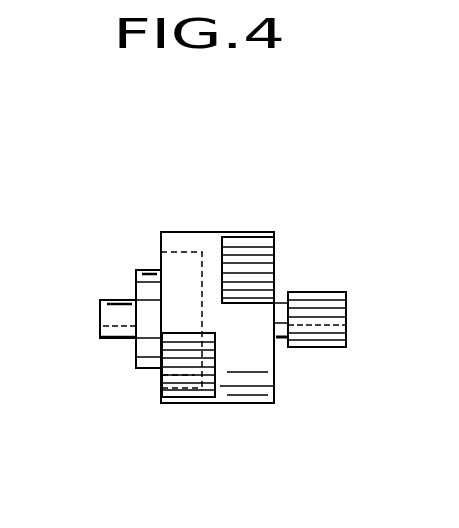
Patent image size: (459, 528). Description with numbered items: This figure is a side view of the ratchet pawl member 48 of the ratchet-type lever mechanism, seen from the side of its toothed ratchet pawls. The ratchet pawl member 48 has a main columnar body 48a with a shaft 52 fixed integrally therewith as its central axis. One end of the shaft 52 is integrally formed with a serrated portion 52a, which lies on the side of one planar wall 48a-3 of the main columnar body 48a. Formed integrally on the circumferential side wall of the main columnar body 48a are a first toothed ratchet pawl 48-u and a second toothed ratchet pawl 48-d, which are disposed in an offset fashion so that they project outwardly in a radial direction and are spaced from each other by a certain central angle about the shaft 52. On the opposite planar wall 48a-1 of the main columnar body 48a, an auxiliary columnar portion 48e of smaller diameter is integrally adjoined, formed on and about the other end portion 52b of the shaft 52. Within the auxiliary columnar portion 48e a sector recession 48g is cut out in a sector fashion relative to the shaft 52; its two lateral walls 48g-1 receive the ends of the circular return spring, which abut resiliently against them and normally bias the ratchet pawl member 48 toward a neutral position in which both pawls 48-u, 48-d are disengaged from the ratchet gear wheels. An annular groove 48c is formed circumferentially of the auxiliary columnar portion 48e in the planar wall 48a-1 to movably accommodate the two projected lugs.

The ratchet pawl member 48 is at (125, 183).
The main columnar body 48a is at (230, 404).
The planar wall 48a-1 is at (161, 262).
The planar wall 48a-3 is at (275, 380).
The annular groove 48c is at (193, 252).
The second toothed ratchet pawl 48-d is at (253, 252).
The first toothed ratchet pawl 48-u is at (180, 373).
The auxiliary columnar portion 48e is at (142, 293).
The sector recession 48g is at (150, 346).
The lateral walls 48g-1 is at (135, 293).
The shaft 52 is at (313, 348).
The serrated portion 52a is at (313, 298).
The end portion of the shaft 52b is at (145, 327).